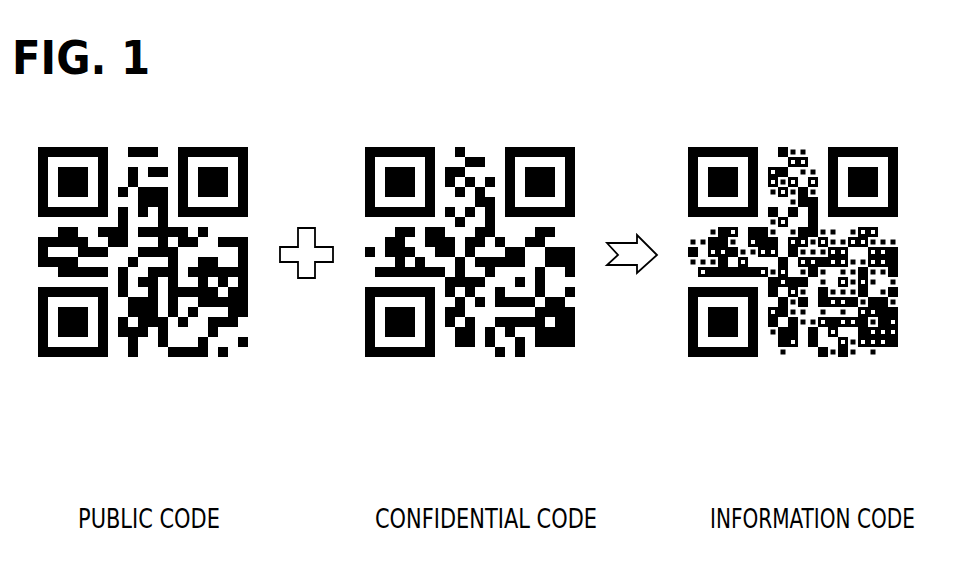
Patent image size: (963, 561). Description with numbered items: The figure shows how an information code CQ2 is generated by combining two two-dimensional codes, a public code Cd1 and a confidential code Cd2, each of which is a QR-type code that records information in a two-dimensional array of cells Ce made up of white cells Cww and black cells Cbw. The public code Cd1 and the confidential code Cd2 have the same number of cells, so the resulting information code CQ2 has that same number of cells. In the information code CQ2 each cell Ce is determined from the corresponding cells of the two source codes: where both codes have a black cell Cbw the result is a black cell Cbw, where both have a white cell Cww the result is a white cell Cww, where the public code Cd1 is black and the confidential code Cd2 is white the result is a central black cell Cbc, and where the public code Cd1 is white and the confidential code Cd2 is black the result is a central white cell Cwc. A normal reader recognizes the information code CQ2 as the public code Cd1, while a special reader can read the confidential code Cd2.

The public code Cd1 is at (230, 130).
The confidential code Cd2 is at (563, 130).
The information code CQ2 is at (871, 132).
The white cell Cww is at (160, 357).
The black cell Cbw is at (220, 357).
The cell Ce is at (248, 418).
The central white cell Cwc is at (772, 147).
The central black cell Cbc is at (813, 147).